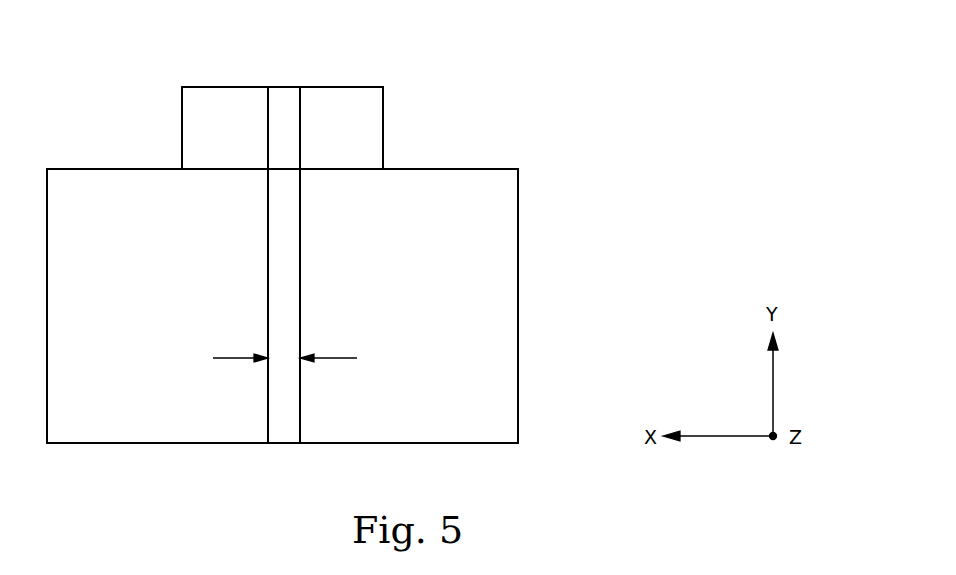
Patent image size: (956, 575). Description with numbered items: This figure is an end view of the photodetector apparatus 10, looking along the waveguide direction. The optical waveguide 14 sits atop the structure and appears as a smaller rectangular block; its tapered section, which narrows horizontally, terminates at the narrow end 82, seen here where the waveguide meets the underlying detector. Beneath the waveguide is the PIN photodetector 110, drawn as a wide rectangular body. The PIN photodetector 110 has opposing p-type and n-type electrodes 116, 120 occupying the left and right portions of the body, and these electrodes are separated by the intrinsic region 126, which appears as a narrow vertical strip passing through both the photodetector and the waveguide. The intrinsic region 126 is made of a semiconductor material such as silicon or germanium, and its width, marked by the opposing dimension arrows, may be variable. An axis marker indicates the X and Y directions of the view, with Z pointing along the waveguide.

The photodetector apparatus 10 is at (346, 243).
The optical waveguide 14 is at (408, 121).
The narrow end 82 is at (281, 100).
The PIN photodetector 110 is at (545, 218).
The p-type electrode 116 is at (145, 430).
The n-type electrode 120 is at (435, 430).
The intrinsic region 126 is at (279, 430).